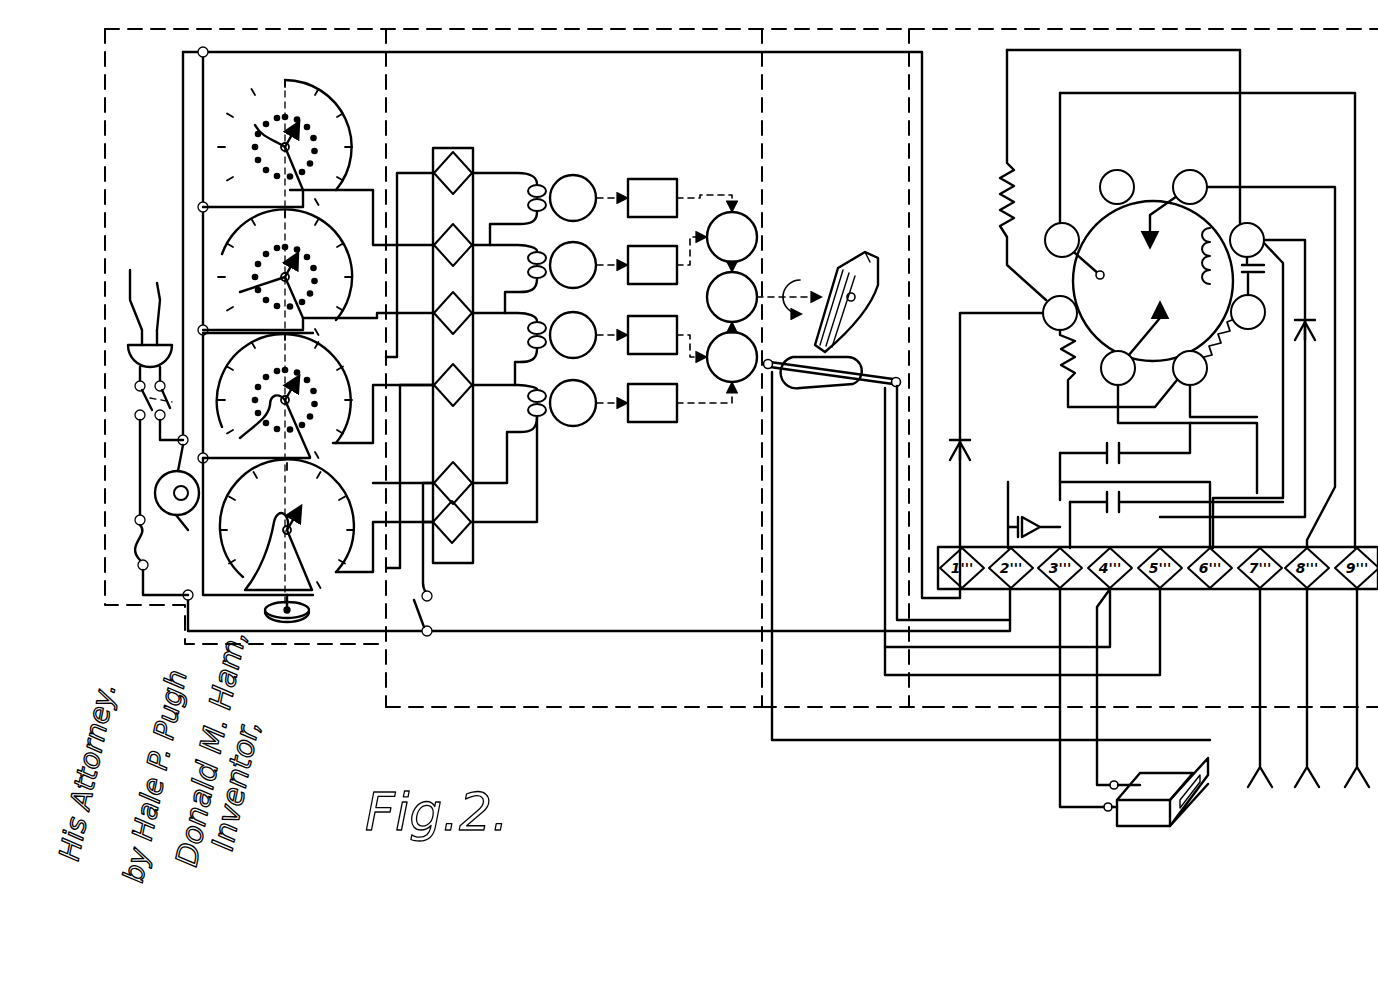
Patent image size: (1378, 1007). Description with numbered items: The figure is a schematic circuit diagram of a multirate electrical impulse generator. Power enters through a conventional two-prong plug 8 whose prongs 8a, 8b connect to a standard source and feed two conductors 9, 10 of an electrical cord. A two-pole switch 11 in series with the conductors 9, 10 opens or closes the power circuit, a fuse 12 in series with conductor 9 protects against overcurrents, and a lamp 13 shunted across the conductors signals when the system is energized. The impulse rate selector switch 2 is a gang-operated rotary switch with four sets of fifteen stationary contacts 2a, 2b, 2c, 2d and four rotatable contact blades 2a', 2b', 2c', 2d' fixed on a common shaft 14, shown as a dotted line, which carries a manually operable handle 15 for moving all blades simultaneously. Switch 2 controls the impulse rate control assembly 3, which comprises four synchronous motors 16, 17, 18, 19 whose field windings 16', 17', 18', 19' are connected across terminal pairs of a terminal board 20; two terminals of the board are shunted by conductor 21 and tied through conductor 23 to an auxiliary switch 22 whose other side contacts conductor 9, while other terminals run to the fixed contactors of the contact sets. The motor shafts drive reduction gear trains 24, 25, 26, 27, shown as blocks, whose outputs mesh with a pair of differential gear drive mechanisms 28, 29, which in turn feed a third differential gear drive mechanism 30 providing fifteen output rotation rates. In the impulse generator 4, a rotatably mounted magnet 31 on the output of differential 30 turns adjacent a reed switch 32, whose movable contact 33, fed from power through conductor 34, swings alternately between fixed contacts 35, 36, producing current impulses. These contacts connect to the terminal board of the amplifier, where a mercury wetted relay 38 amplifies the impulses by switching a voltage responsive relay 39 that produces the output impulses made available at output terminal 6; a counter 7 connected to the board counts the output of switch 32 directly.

The impulse rate selector switch 2 is at (343, 645).
The set of stationary contacts 2a is at (318, 158).
The rotatable contact blade 2a' is at (257, 130).
The set of stationary contacts 2b is at (318, 266).
The rotatable contact blade 2b' is at (255, 286).
The set of stationary contacts 2c is at (318, 392).
The rotatable contact blade 2c' is at (260, 417).
The set of stationary contacts 2d is at (318, 524).
The rotatable contact blade 2d' is at (259, 552).
The impulse rate control assembly 3 is at (658, 708).
The impulse generator 4 is at (822, 708).
The output terminal 6 is at (1015, 708).
The counter 7 is at (1150, 826).
The two-prong terminal plug 8 is at (128, 360).
The prong 8a is at (129, 283).
The prong 8b is at (158, 301).
The electrical conductor 9 is at (258, 633).
The electrical conductor 10 is at (182, 165).
The two-pole switch 11 is at (135, 400).
The fuse 12 is at (130, 540).
The lamp 13 is at (170, 512).
The common shaft 14 is at (262, 598).
The manually operable handle 15 is at (310, 612).
The synchronous motor 16 is at (573, 198).
The field winding 16' is at (516, 183).
The synchronous motor 17 is at (573, 265).
The field winding 17' is at (509, 279).
The synchronous motor 18 is at (573, 335).
The field winding 18' is at (549, 336).
The synchronous motor 19 is at (573, 403).
The field winding 19' is at (538, 453).
The terminal board 20 is at (440, 148).
The conductor 21 is at (425, 482).
The switch 22 is at (432, 613).
The conductor 23 is at (435, 582).
The reduction gear train 24 is at (664, 198).
The reduction gear train 25 is at (651, 260).
The reduction gear train 26 is at (651, 336).
The reduction gear train 27 is at (664, 403).
The differential gear drive mechanism 28 is at (732, 241).
The differential gear drive mechanism 29 is at (732, 353).
The differential gear drive mechanism 30 is at (763, 297).
The rotatably mounted magnet 31 is at (845, 268).
The reed switch 32 is at (826, 392).
The movable contact 33 is at (798, 378).
The conductor 34 is at (764, 562).
The fixed switch contact 35 is at (876, 366).
The fixed switch contact 36 is at (864, 386).
The mercury wetted relay 38 is at (1095, 178).
The voltage responsive relay 39 is at (1160, 195).